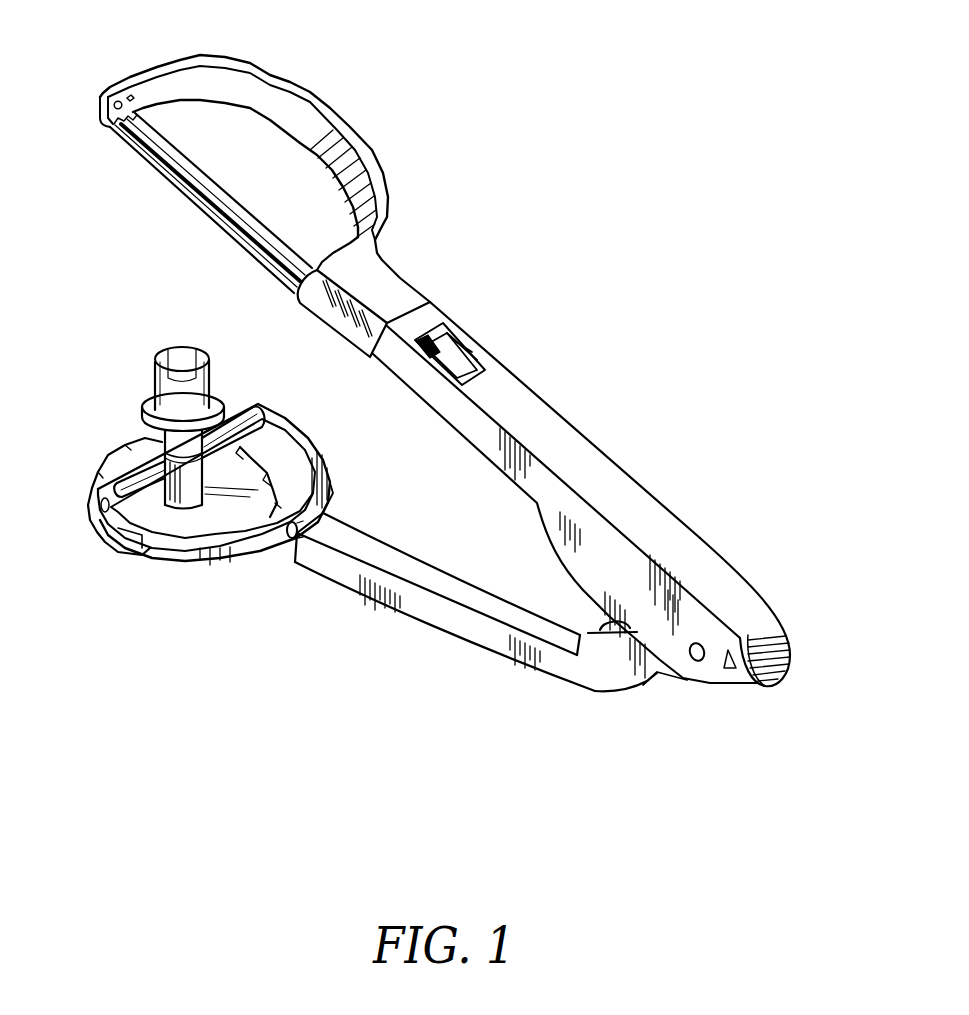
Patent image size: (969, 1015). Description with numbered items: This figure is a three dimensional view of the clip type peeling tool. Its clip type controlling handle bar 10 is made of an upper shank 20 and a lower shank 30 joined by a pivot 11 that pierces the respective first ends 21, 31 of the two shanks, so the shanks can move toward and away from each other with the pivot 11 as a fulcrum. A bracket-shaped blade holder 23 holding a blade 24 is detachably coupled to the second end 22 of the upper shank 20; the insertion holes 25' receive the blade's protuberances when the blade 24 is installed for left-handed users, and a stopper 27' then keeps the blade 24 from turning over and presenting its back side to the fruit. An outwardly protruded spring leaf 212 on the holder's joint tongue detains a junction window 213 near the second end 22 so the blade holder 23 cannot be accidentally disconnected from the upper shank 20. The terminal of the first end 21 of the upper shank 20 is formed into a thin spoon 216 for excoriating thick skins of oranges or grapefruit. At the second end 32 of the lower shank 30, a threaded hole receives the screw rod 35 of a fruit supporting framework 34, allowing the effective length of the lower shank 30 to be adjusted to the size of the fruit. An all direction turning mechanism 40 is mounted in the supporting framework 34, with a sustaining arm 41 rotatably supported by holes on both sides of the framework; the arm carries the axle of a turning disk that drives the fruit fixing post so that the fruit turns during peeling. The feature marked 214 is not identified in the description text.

The clip type controlling handle bar 10 is at (575, 213).
The pivot 11 is at (695, 662).
The upper shank 20 is at (595, 462).
The first end of the upper shank 21 is at (707, 580).
The second end of the upper shank 22 is at (428, 305).
The spring leaf 212 is at (480, 340).
The junction window 213 is at (457, 327).
The guide slot 214 is at (213, 197).
The thin spoon 216 is at (800, 655).
The blade holder 23 is at (270, 75).
The blade 24 is at (133, 152).
The insertion holes 25' is at (78, 83).
The stopper 27' is at (126, 52).
The lower shank 30 is at (423, 627).
The first end of the lower shank 31 is at (622, 673).
The second end of the lower shank 32 is at (343, 515).
The supporting framework 34 is at (297, 425).
The screw rod 35 is at (287, 530).
The all direction turning mechanism 40 is at (120, 343).
The sustaining arm 41 is at (123, 463).